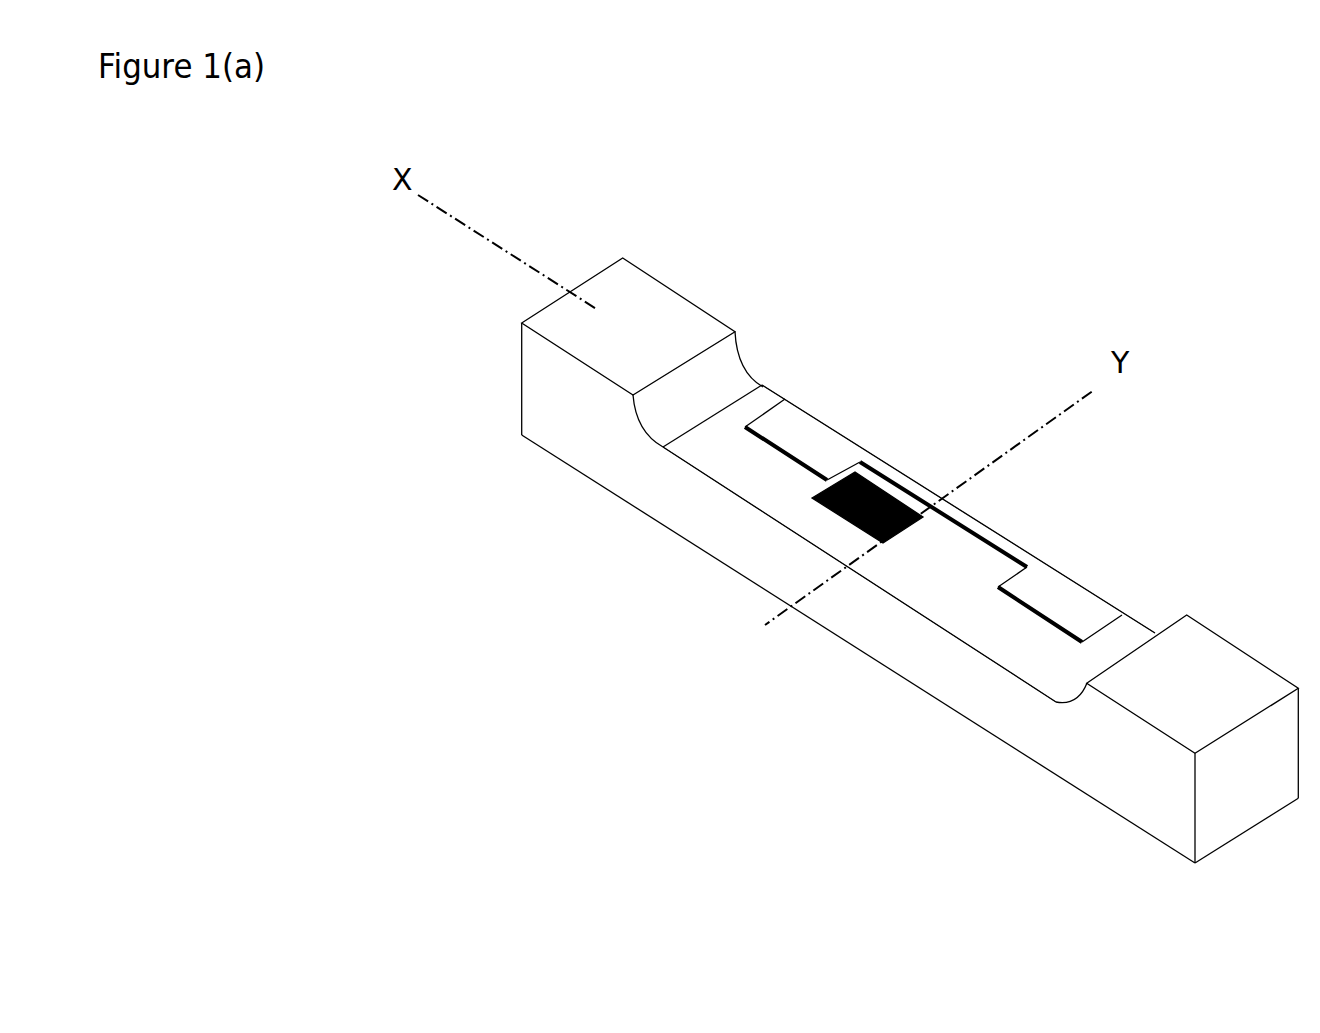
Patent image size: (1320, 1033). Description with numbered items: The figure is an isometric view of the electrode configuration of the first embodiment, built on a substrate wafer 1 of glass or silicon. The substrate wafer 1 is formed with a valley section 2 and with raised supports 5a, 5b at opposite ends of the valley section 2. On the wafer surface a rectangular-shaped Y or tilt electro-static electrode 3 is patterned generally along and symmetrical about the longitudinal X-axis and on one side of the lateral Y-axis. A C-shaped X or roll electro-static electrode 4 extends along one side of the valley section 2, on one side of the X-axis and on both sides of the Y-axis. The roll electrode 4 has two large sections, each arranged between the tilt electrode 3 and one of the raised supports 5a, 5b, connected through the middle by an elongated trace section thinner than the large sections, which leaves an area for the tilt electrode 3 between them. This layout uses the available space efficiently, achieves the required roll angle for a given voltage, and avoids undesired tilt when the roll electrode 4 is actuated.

The substrate wafer 1 is at (1025, 730).
The valley section 2 is at (946, 589).
The Y (tilt) electro-static electrode 3 is at (826, 510).
The X (roll) electro-static electrode 4 is at (813, 418).
The raised support 5a is at (638, 344).
The raised support 5b is at (1208, 692).